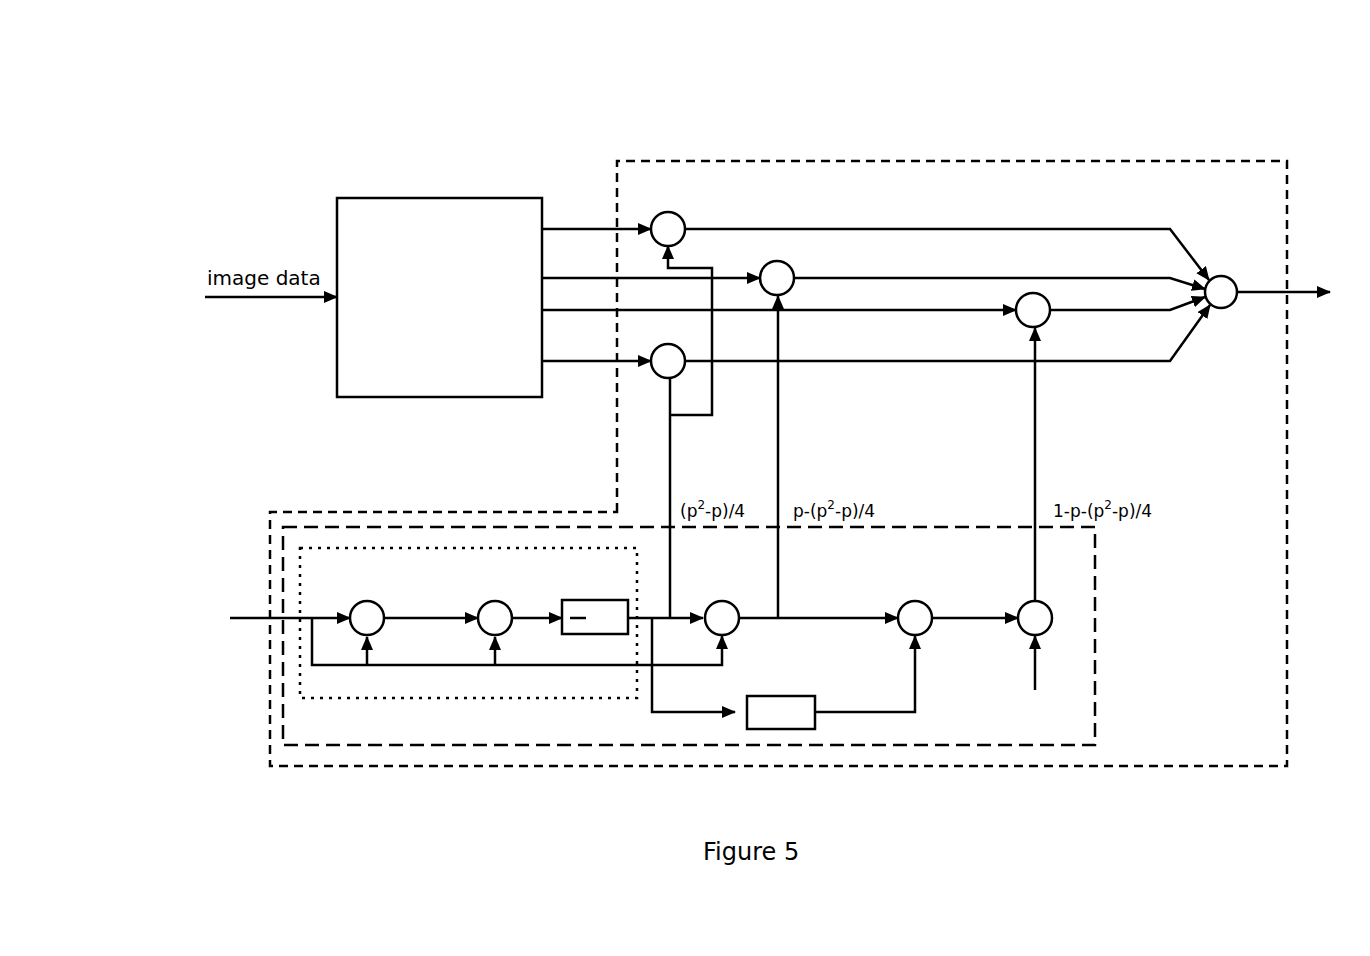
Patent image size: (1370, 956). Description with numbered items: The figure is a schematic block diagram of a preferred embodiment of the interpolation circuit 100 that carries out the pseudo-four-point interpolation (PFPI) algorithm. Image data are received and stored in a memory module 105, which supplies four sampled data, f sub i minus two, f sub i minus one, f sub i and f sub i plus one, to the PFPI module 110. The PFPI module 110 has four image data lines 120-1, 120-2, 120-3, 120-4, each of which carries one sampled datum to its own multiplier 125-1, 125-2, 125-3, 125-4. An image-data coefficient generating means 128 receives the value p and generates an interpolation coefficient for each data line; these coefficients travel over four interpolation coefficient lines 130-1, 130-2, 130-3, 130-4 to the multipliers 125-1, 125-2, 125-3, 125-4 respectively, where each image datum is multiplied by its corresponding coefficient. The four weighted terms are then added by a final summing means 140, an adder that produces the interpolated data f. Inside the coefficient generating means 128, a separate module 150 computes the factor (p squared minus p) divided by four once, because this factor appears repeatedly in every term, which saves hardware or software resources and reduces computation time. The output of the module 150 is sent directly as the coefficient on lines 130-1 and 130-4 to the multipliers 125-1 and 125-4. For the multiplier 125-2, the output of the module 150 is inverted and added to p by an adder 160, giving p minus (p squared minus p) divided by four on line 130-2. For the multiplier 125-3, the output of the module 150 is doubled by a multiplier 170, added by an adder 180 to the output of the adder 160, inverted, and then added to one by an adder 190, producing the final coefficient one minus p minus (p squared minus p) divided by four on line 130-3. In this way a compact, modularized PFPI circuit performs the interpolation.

The interpolation circuit 100 is at (341, 120).
The memory module 105 is at (394, 213).
The PFPI module 110 is at (690, 105).
The image data line 120-1 is at (572, 205).
The image data line 120-2 is at (565, 255).
The image data line 120-3 is at (570, 315).
The image data line 120-4 is at (583, 362).
The multiplier 125-1 is at (676, 214).
The multiplier 125-2 is at (793, 264).
The multiplier 125-3 is at (1050, 297).
The multiplier 125-4 is at (690, 342).
The image-data coefficient generating means 128 is at (562, 727).
The interpolation coefficient line 130-1 is at (712, 393).
The interpolation coefficient line 130-2 is at (778, 390).
The interpolation coefficient line 130-3 is at (1035, 393).
The interpolation coefficient line 130-4 is at (658, 400).
The final summing means 140 is at (1232, 270).
The (p^2-p)/4 module 150 is at (310, 682).
The adder 160 is at (740, 624).
The multiplier 170 is at (795, 720).
The adder 180 is at (932, 624).
The adder 190 is at (1052, 618).